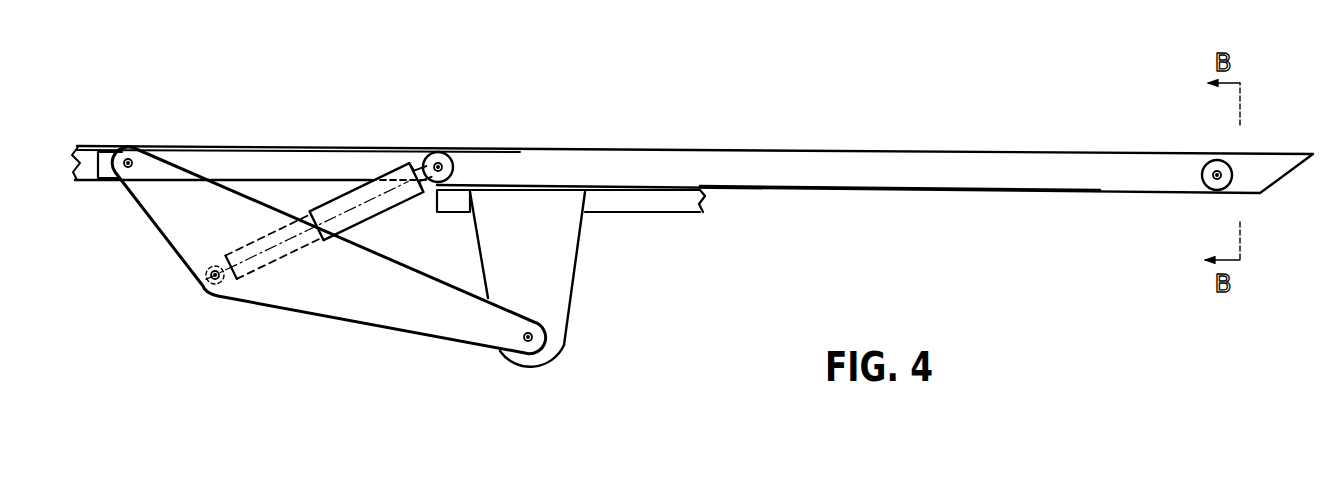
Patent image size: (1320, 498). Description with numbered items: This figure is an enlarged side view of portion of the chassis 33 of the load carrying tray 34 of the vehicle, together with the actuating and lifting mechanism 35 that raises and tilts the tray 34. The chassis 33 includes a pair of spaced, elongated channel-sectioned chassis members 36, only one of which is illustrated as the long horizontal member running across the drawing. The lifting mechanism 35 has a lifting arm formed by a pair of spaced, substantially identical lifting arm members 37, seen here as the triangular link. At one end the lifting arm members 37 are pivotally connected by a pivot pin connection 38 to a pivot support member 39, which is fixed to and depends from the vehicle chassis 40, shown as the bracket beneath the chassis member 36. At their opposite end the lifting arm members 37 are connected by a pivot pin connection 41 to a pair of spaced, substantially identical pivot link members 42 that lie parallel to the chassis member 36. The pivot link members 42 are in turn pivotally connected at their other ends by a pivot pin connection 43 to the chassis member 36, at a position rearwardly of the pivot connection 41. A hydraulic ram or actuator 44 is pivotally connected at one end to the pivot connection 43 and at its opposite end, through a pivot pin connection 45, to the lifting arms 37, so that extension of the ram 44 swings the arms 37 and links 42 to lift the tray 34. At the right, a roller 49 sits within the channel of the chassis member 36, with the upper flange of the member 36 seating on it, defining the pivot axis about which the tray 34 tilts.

The chassis 33 is at (992, 147).
The load carrying tray 34 is at (765, 125).
The actuating and lifting mechanism 35 is at (303, 323).
The chassis member 36 is at (887, 181).
The lifting arm member 37 is at (387, 306).
The pivot pin connection 38 is at (556, 328).
The pivot support member 39 is at (557, 355).
The vehicle chassis 40 is at (648, 205).
The pivot pin connection 41 is at (141, 142).
The pivot link member 42 is at (238, 157).
The pivot pin connection 43 is at (452, 148).
The hydraulic ram 44 is at (330, 196).
The pivot pin connection 45 is at (200, 292).
The roller 49 is at (1205, 162).